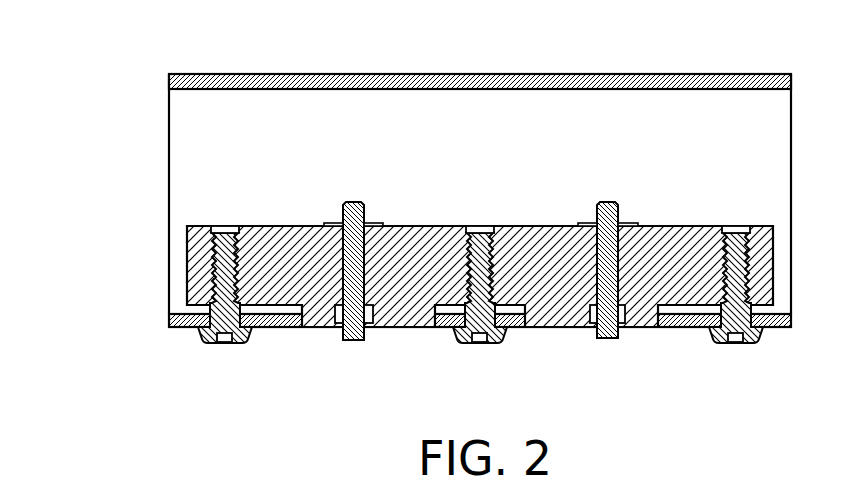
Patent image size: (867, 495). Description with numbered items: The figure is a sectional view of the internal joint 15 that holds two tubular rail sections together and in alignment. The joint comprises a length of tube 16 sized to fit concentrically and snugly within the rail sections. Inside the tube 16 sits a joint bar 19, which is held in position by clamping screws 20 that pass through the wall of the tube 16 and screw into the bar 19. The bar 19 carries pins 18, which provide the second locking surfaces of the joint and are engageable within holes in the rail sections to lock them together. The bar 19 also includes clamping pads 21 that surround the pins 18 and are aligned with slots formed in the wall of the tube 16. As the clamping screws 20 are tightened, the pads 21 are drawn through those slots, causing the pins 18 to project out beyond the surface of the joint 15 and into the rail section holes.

The internal joint 15 is at (112, 224).
The tube 16 is at (525, 74).
The pin 18 is at (350, 343).
The joint bar 19 is at (428, 226).
The clamping screw 20 is at (207, 339).
The clamping pad 21 is at (388, 328).